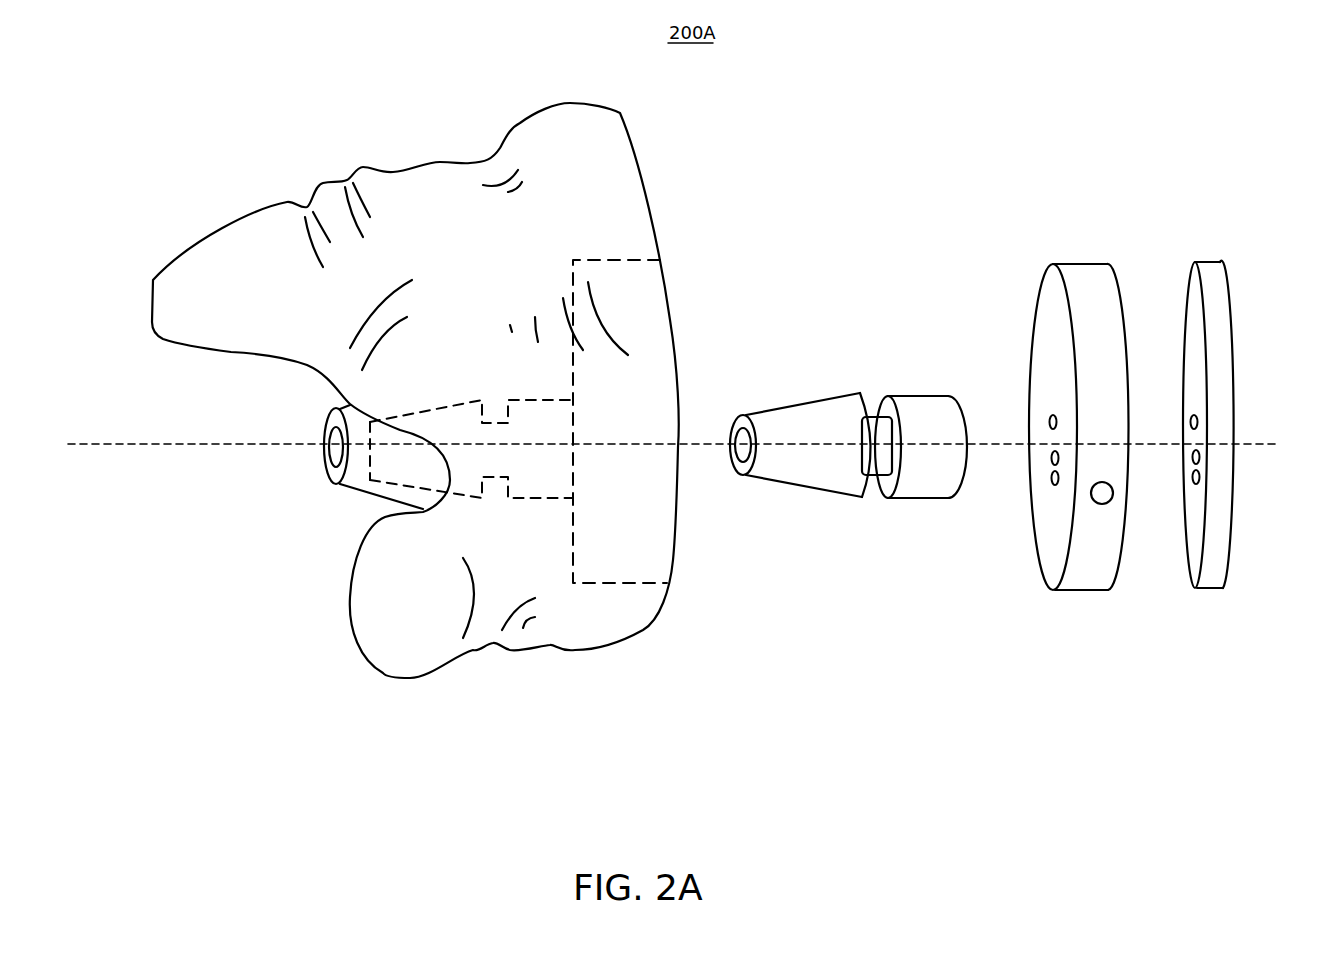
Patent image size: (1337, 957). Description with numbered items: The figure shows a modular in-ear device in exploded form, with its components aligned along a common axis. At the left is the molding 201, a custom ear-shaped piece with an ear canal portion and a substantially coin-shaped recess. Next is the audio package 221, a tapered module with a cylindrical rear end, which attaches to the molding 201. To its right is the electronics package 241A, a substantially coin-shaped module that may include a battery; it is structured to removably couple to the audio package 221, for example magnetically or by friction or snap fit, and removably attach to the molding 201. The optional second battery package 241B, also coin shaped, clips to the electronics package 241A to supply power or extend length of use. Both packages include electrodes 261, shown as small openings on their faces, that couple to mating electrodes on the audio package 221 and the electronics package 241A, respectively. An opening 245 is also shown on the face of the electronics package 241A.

The molding 201 is at (613, 628).
The audio package 221 is at (846, 482).
The electronics package 241A is at (1083, 577).
The second battery package 241B is at (1212, 577).
The opening 245 is at (1103, 504).
The electrodes 261 is at (1050, 479).